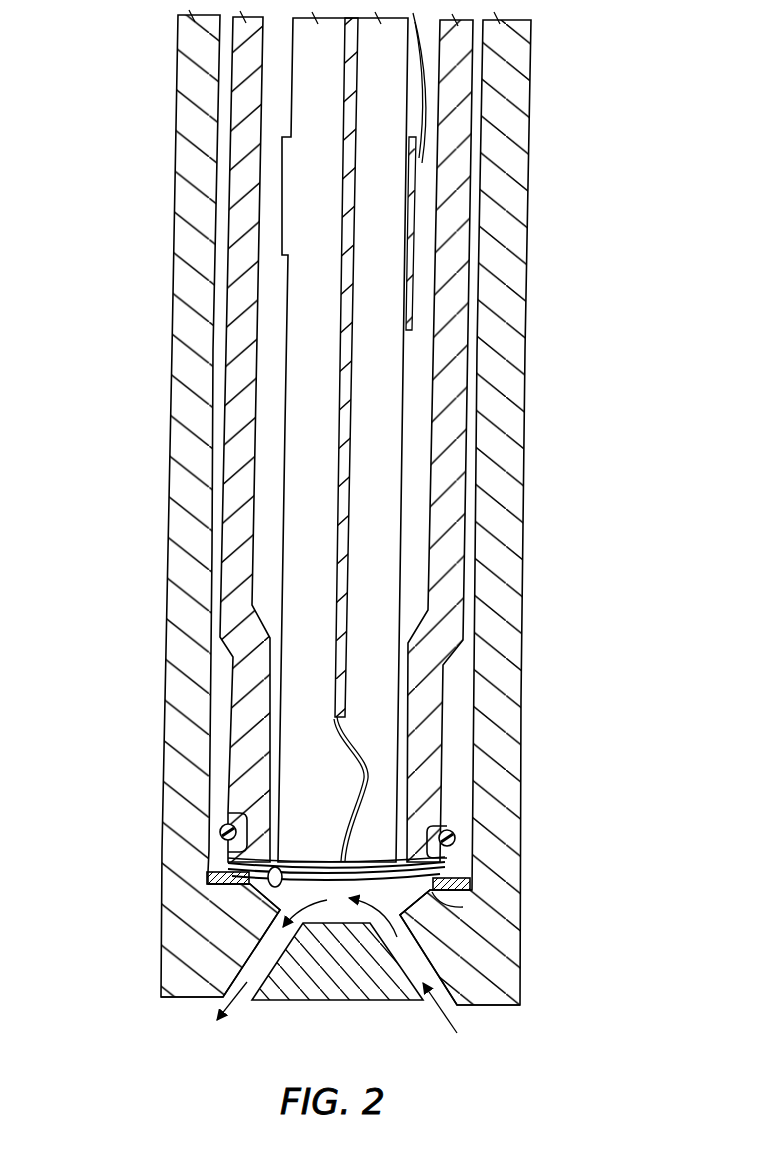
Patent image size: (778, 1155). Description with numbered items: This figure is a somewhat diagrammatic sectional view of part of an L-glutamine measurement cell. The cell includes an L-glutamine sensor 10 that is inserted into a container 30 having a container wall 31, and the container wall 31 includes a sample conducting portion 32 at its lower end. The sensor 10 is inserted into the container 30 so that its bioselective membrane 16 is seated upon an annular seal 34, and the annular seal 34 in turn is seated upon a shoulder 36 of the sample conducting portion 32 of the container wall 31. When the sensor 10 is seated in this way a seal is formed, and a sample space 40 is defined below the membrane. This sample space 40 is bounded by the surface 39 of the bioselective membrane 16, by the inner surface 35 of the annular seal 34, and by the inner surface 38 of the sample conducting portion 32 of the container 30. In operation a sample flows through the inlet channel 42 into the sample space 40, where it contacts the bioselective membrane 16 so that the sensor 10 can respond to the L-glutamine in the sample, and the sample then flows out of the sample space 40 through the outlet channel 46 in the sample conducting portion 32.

The L-glutamine sensor 10 is at (474, 258).
The bioselective membrane 16 is at (300, 886).
The container 30 is at (580, 306).
The container wall 31 is at (508, 520).
The sample conducting portion 32 is at (508, 992).
The annular seal 34 is at (450, 860).
The inner surface of annular seal 35 is at (220, 834).
The shoulder 36 is at (480, 906).
The inner surface of sample conducting portion 38 is at (228, 889).
The surface of bioselective membrane 39 is at (280, 912).
The sample space 40 is at (368, 1003).
The inlet channel 42 is at (417, 963).
The outlet channel 46 is at (247, 963).